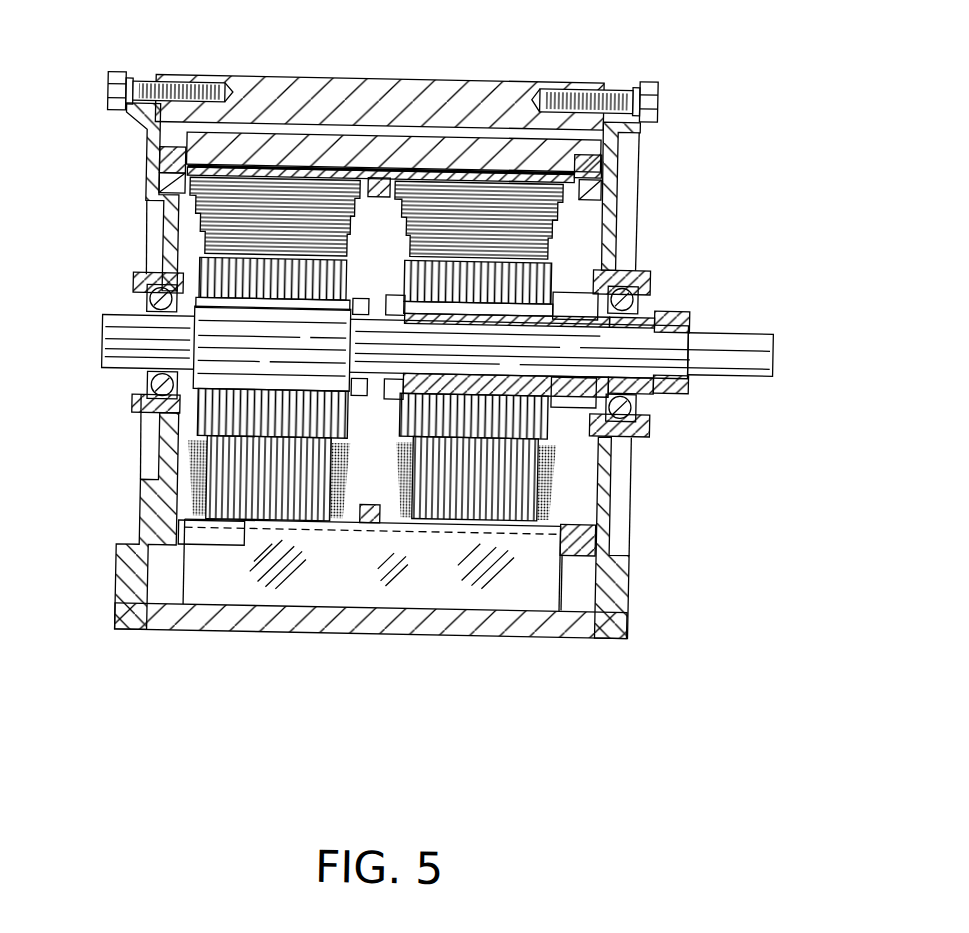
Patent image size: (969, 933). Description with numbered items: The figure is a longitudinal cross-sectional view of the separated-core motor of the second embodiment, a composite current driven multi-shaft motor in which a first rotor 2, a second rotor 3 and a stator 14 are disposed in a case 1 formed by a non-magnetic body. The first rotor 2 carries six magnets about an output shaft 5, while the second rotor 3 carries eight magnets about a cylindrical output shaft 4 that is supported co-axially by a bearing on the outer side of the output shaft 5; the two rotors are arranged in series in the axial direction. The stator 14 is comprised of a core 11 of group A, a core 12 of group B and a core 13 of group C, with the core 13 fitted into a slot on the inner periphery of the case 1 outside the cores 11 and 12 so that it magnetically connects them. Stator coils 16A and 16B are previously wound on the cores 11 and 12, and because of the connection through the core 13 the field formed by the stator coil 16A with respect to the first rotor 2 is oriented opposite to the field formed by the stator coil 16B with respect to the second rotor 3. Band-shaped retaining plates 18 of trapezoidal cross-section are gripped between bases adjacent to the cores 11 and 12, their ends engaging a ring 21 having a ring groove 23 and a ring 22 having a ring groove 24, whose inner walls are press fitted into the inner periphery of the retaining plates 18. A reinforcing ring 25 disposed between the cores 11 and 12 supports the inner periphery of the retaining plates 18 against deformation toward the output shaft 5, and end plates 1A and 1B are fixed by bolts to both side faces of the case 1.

The case 1 is at (463, 99).
The end plate 1A is at (610, 249).
The end plate 1B is at (162, 460).
The first rotor 2 is at (194, 273).
The second rotor 3 is at (558, 430).
The output shaft 4 is at (666, 316).
The output shaft 5 is at (728, 340).
The core 11 is at (218, 514).
The core 12 is at (458, 522).
The core 13 is at (305, 603).
The stator 14 is at (372, 565).
The stator coil 16A is at (307, 207).
The stator coil 16B is at (509, 188).
The retaining plate 18 is at (258, 171).
The ring 21 is at (595, 174).
The ring 22 is at (160, 177).
The ring groove 23 is at (609, 192).
The ring groove 24 is at (157, 195).
The reinforcing ring 25 is at (377, 181).